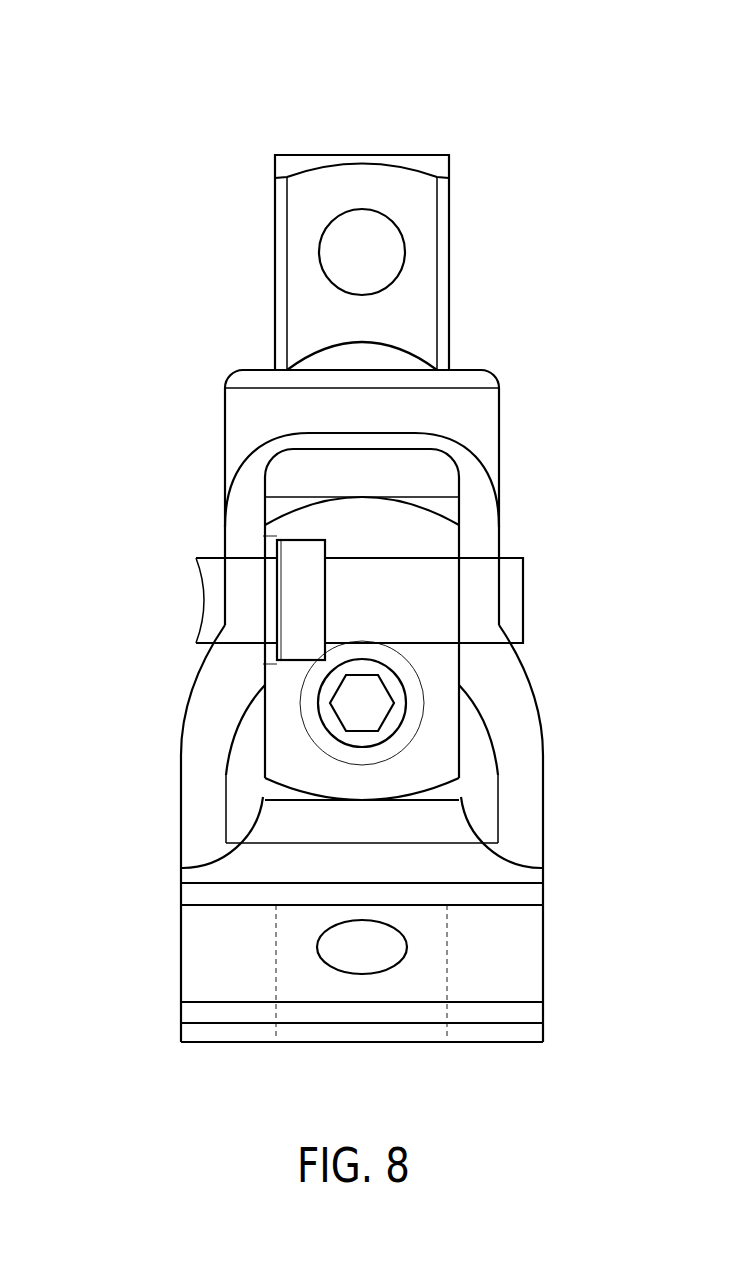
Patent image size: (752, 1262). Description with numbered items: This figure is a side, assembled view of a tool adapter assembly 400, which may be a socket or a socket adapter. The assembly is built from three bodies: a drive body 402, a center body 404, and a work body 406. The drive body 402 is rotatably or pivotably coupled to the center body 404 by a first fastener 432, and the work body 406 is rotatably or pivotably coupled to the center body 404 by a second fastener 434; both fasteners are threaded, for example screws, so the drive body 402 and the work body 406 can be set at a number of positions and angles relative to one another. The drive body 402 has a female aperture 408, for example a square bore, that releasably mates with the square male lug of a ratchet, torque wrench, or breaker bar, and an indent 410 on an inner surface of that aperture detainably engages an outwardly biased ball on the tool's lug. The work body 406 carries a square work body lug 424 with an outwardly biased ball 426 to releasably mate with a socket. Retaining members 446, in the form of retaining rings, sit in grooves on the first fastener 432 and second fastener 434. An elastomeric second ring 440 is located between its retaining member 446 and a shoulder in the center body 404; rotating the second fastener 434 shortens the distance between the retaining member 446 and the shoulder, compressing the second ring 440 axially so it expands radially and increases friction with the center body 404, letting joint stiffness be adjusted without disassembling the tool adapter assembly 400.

The tool adapter assembly 400 is at (72, 78).
The drive body 402 is at (540, 984).
The center body 404 is at (456, 511).
The work body 406 is at (508, 400).
The female aperture 408 is at (276, 951).
The indent 410 is at (364, 969).
The work body lug 424 is at (415, 216).
The outwardly biased ball 426 is at (395, 255).
The first fastener 432 is at (390, 700).
The second fastener 434 is at (197, 591).
The second ring 440 is at (312, 540).
The retaining member 446 is at (258, 552).